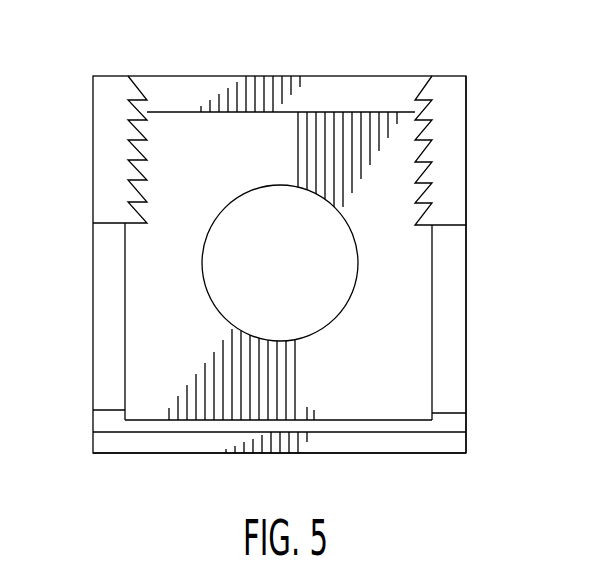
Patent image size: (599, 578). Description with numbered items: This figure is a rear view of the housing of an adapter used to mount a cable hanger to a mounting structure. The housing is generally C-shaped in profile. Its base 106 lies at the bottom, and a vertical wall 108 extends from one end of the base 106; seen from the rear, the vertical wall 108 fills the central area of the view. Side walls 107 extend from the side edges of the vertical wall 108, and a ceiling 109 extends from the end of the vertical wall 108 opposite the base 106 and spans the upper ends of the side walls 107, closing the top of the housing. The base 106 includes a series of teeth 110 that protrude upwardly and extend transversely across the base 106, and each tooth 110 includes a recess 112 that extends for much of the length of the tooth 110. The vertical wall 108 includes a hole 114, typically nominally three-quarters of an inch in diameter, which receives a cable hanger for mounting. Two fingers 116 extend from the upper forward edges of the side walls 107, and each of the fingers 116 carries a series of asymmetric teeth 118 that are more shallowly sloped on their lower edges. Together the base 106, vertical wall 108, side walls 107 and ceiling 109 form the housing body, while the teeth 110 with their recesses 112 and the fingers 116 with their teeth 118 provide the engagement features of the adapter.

The base 106 is at (338, 448).
The side walls 107 is at (450, 373).
The vertical wall 108 is at (397, 327).
The ceiling 109 is at (393, 97).
The teeth 110 is at (110, 420).
The recess 112 is at (203, 418).
The hole 114 is at (319, 279).
The fingers 116 is at (452, 172).
The asymmetric teeth 118 is at (415, 162).